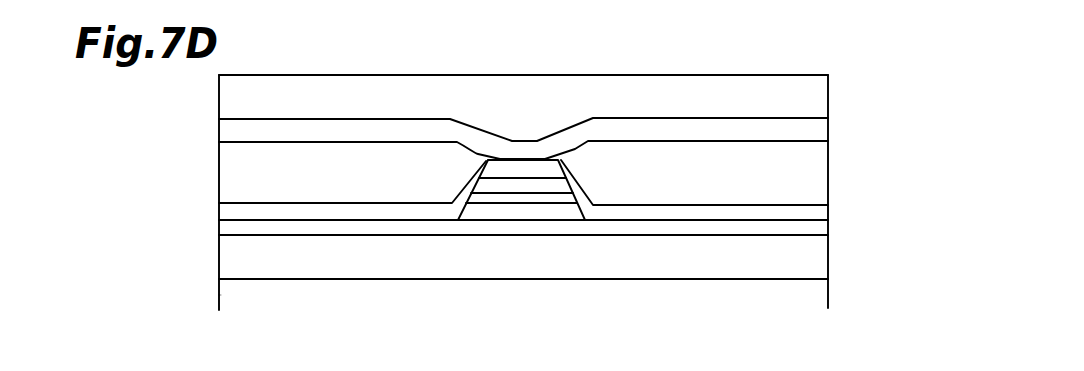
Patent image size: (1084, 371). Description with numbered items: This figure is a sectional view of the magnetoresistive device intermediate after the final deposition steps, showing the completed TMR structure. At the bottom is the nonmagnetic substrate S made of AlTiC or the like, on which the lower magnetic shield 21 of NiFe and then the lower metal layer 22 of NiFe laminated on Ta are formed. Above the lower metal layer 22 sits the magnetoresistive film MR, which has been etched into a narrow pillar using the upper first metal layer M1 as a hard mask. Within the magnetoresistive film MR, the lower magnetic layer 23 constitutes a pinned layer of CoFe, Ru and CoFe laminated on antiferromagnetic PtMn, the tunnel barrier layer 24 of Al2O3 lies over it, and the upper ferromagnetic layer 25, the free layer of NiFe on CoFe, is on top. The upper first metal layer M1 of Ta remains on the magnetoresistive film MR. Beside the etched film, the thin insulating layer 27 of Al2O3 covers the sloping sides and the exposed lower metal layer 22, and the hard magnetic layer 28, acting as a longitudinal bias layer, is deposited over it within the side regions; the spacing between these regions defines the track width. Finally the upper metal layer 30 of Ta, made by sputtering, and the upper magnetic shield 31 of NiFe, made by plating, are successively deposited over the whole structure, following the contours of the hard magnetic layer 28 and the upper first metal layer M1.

The upper magnetic shield 31 is at (820, 88).
The upper metal layer 30 is at (820, 123).
The upper first metal layer M1 is at (567, 167).
The upper ferromagnetic layer 25 is at (570, 185).
The tunnel barrier layer 24 is at (575, 197).
The lower magnetic layer 23 is at (593, 205).
The magnetoresistive film MR is at (702, 178).
The insulating layer 27 is at (224, 214).
The lower metal layer 22 is at (820, 228).
The lower magnetic shield 21 is at (816, 258).
The substrate S is at (816, 288).
The hard magnetic layer 28 is at (395, 153).